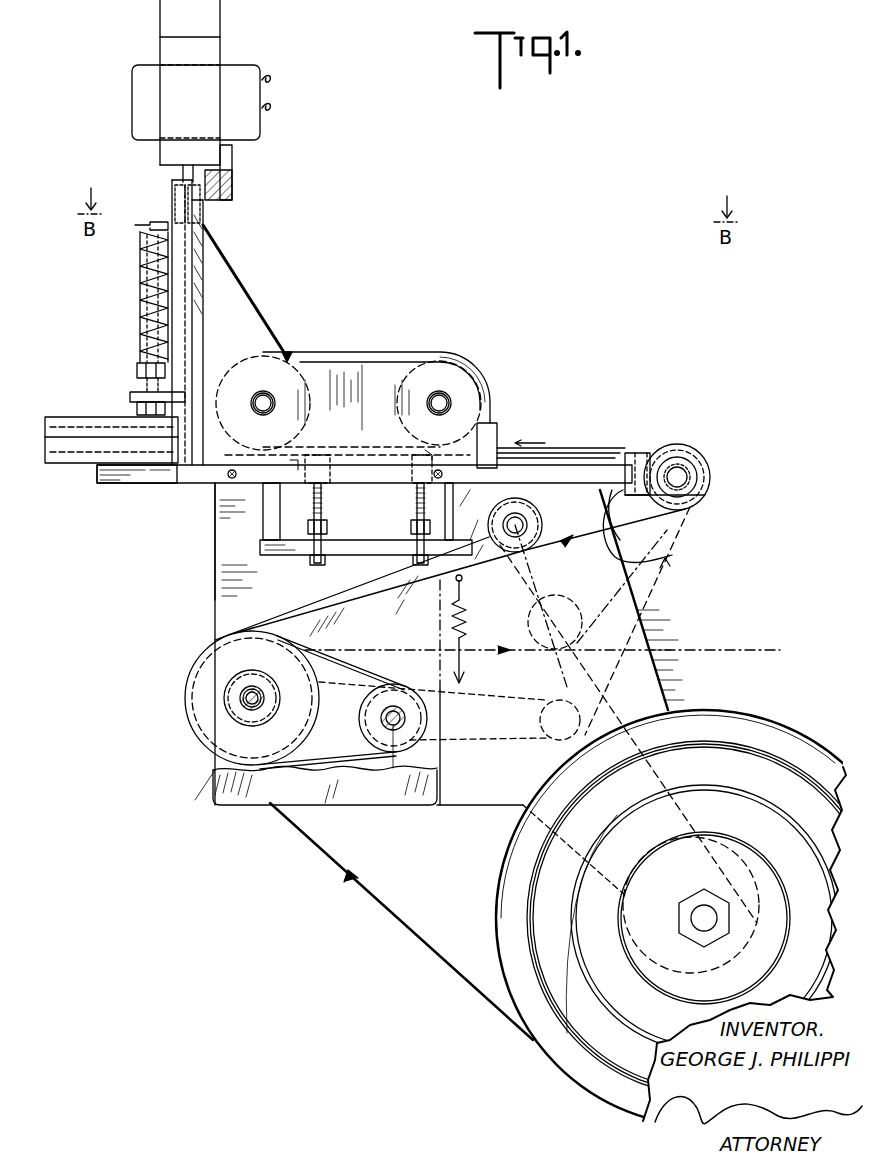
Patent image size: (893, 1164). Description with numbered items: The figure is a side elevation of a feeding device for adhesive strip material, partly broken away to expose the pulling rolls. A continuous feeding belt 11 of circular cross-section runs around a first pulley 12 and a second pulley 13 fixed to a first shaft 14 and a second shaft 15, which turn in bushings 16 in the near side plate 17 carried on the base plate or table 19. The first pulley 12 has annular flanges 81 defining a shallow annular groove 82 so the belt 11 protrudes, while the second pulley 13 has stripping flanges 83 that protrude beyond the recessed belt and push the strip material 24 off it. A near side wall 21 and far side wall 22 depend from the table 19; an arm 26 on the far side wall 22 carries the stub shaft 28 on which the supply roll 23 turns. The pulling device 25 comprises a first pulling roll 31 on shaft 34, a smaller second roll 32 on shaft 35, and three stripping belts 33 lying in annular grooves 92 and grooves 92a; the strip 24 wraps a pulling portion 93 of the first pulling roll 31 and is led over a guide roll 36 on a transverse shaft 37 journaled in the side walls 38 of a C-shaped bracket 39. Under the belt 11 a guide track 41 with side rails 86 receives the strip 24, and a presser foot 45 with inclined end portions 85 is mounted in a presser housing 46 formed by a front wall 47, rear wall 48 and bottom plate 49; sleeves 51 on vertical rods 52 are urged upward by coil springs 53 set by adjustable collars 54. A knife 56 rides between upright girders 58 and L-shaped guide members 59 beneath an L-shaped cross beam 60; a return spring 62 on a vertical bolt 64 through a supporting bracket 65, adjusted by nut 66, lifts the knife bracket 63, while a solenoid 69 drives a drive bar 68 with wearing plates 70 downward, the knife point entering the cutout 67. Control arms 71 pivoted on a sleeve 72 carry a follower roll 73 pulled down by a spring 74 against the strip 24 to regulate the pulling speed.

The feeding belt 11 is at (405, 353).
The first pulley 12 is at (446, 384).
The second pulley 13 is at (305, 350).
The first shaft 14 is at (438, 408).
The second shaft 15 is at (266, 395).
The bushings 16 is at (270, 406).
The near side plate 17 is at (363, 385).
The base plate or table 19 is at (257, 488).
The near side wall 21 is at (250, 806).
The far side wall 22 is at (660, 665).
The supply roll 23 is at (530, 988).
The strip material 24 is at (565, 448).
The pulling device 25 is at (196, 764).
The arm 26 is at (693, 798).
The stub shaft 28 is at (706, 918).
The first pulling roll 31 is at (190, 690).
The second roll 32 is at (412, 719).
The stripping belts 33 is at (378, 675).
The shaft 34 is at (238, 704).
The shaft 35 is at (395, 748).
The guide roll 36 is at (712, 478).
The transverse shaft 37 is at (690, 472).
The side walls 38 is at (655, 452).
The C-shaped bracket 39 is at (630, 518).
The guide track 41 is at (66, 450).
The presser foot 45 is at (364, 484).
The presser housing 46 is at (249, 563).
The front wall 47 is at (270, 522).
The rear wall 48 is at (501, 520).
The bottom plate 49 is at (365, 550).
The sleeves 51 is at (330, 476).
The vertical rods 52 is at (326, 532).
The coil springs 53 is at (312, 503).
The adjustable collars 54 is at (327, 522).
The knife 56 is at (207, 312).
The upright girders 58 is at (200, 258).
The L-shaped guide members 59 is at (217, 290).
The L-shaped cross beam 60 is at (226, 170).
The return spring 62 is at (140, 276).
The knife bracket 63 is at (135, 226).
The vertical bolt 64 is at (150, 310).
The supporting bracket 65 is at (130, 397).
The nut 66 is at (140, 376).
The cutout 67 is at (180, 483).
The drive bar 68 is at (183, 172).
The solenoid 69 is at (236, 80).
The wearing plates 70 is at (175, 195).
The control arms 71 is at (390, 625).
The sleeve 72 is at (252, 688).
The follower roll 73 is at (527, 525).
The spring 74 is at (462, 612).
The annular flanges 81 is at (480, 370).
The annular groove 82 is at (500, 407).
The stripping flanges 83 is at (286, 351).
The end portions 85 is at (298, 460).
The rails 86 is at (72, 419).
The annular grooves 92 is at (218, 666).
The grooves 92a is at (410, 735).
The pulling portion 93 is at (205, 668).